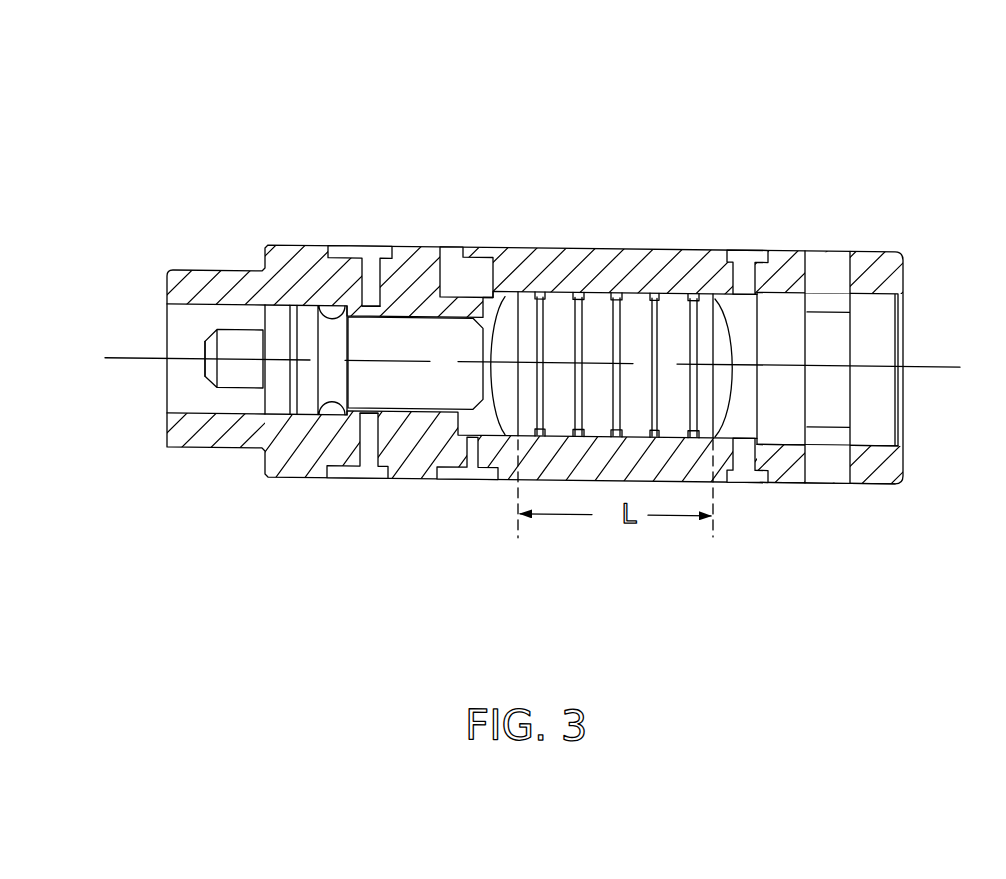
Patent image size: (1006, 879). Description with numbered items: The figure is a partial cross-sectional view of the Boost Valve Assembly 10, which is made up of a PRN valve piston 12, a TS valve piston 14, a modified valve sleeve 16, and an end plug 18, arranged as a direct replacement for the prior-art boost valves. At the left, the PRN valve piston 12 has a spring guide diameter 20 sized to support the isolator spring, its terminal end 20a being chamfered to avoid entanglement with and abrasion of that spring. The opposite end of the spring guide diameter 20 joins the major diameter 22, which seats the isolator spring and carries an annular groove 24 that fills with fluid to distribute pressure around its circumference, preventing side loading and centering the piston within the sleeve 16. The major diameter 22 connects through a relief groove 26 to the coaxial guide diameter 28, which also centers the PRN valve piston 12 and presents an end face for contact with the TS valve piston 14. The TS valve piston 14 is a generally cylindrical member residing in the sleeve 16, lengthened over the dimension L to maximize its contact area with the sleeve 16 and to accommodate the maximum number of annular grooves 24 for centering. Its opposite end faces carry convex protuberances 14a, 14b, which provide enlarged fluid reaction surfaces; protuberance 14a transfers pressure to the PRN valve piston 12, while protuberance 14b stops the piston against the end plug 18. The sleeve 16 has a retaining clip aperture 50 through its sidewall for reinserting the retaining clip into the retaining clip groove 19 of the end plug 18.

The Boost Valve Assembly 10 is at (590, 178).
The PRN valve piston 12 is at (410, 418).
The TS valve piston 14 is at (562, 288).
The convex protuberance 14a is at (513, 327).
The convex protuberance 14b is at (722, 390).
The valve sleeve 16 is at (195, 257).
The end plug 18 is at (890, 406).
The retaining clip groove 19 is at (832, 307).
The spring guide diameter 20 is at (233, 384).
The terminal end 20a is at (208, 345).
The major diameter 22 is at (270, 310).
The annular groove 24 is at (688, 290).
The relief groove 26 is at (337, 322).
The guide diameter 28 is at (424, 353).
The retaining clip aperture 50 is at (833, 471).